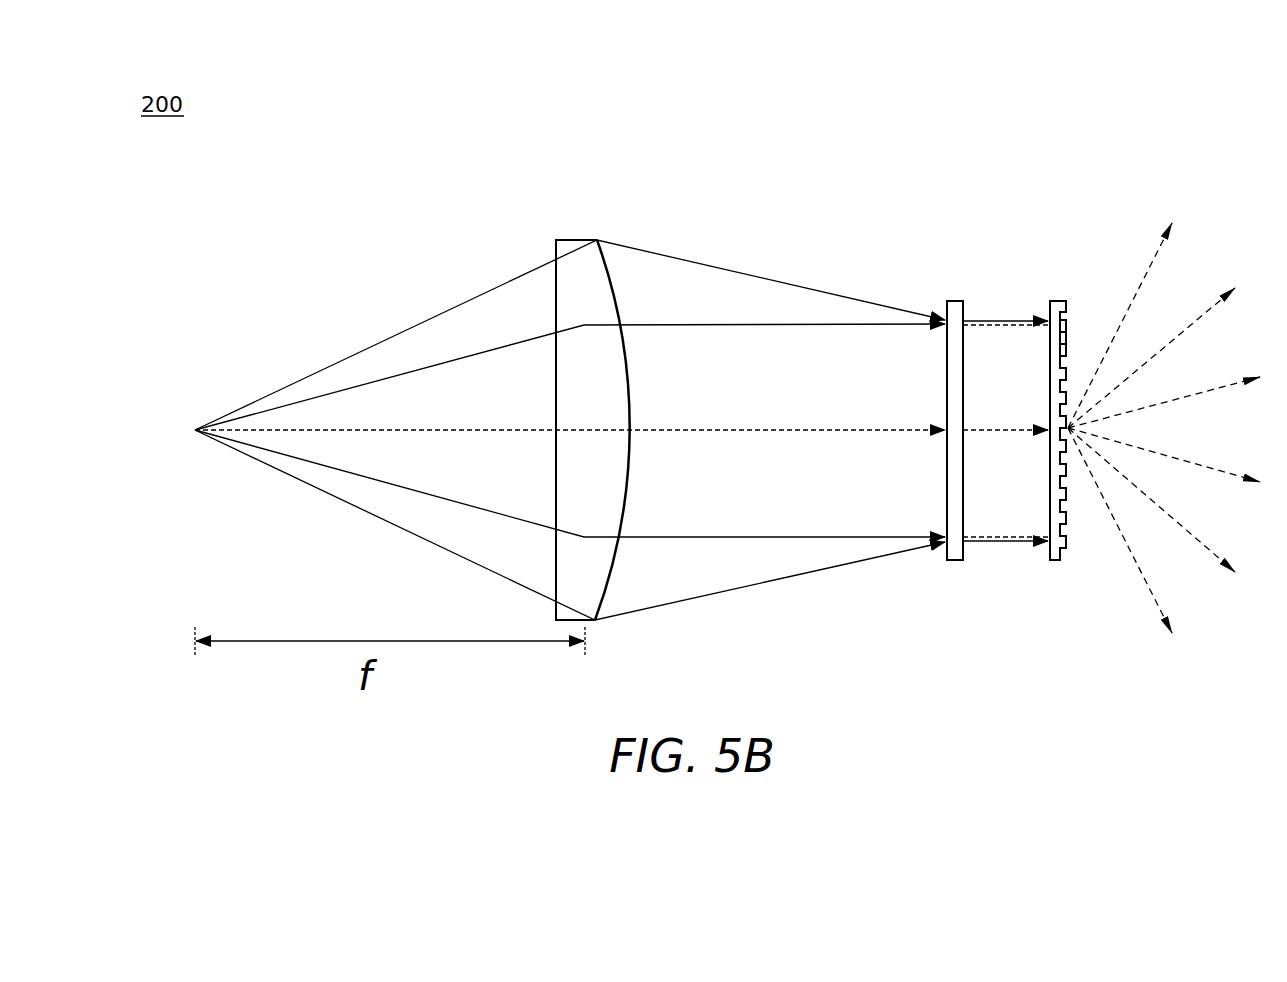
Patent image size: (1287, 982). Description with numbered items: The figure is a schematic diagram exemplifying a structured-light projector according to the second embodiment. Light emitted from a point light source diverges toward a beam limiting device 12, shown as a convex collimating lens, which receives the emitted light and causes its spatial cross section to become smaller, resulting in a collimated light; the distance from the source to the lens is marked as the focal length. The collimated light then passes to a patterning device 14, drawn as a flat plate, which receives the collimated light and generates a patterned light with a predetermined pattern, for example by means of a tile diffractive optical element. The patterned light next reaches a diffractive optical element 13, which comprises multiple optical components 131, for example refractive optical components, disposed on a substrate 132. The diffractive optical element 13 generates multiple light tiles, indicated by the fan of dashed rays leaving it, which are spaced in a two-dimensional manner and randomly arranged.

The beam limiting device 12 is at (568, 234).
The patterning device 14 is at (954, 298).
The diffractive optical element 13 is at (1059, 297).
The optical components 131 is at (1068, 343).
The substrate 132 is at (1047, 313).